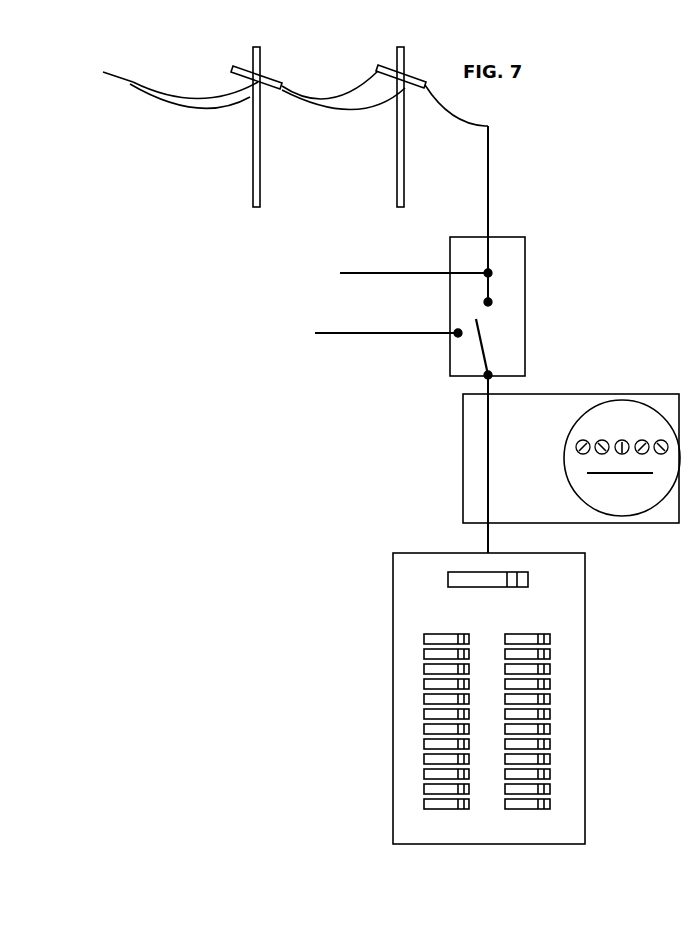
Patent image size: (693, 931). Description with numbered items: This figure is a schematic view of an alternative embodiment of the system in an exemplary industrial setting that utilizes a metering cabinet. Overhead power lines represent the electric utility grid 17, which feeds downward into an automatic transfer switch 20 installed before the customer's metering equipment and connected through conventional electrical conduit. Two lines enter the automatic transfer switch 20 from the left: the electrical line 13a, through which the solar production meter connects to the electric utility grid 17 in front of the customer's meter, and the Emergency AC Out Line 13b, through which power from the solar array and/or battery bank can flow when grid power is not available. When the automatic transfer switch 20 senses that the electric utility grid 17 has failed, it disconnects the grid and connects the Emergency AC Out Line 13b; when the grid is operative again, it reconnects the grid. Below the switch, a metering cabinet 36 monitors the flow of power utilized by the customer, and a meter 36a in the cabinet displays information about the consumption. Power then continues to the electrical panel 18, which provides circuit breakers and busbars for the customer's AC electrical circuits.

The electric utility grid 17 is at (295, 127).
The automatic transfer switch 20 is at (525, 305).
The electrical line 13a is at (410, 268).
The Emergency AC Out Line 13b is at (385, 343).
The metering cabinet 36 is at (453, 452).
The meter 36a is at (564, 473).
The electrical panel 18 is at (392, 803).